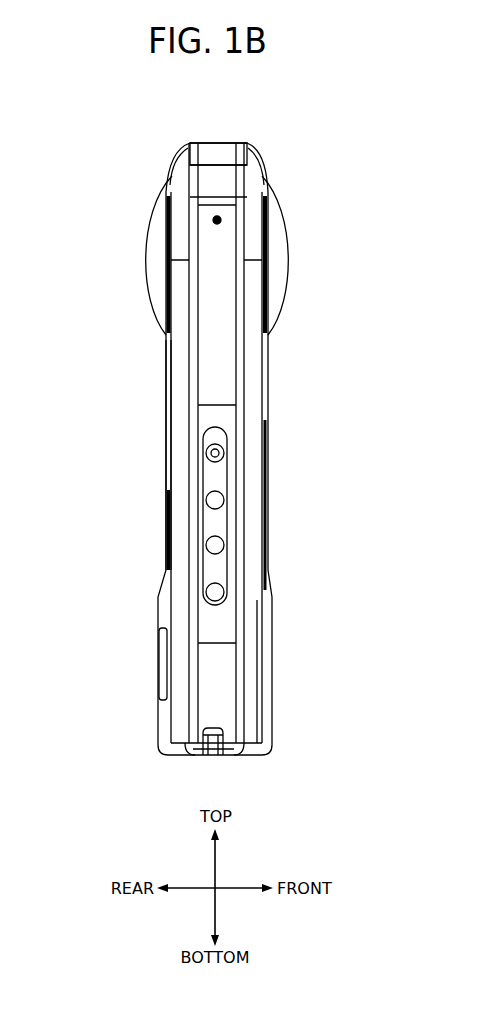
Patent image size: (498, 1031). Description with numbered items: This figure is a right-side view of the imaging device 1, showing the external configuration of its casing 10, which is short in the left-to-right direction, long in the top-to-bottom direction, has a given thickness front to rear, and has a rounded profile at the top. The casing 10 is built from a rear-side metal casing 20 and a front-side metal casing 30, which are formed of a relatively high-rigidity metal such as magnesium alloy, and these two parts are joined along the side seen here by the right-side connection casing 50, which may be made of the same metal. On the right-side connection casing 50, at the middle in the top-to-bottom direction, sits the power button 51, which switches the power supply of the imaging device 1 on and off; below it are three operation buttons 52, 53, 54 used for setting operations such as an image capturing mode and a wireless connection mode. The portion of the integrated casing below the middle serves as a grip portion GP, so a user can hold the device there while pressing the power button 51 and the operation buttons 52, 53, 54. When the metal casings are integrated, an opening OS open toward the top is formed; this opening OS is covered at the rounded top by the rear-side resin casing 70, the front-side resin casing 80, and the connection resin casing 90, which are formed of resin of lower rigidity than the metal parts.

The imaging device 1 is at (271, 153).
The casing 10 is at (165, 178).
The rear-side metal casing 20 is at (169, 392).
The front-side metal casing 30 is at (268, 403).
The right-side connection casing 50 is at (225, 690).
The power button 51 is at (222, 453).
The operation button 52 is at (222, 500).
The operation button 53 is at (222, 545).
The operation button 54 is at (222, 592).
The rear-side resin casing 70 is at (180, 163).
The front-side resin casing 80 is at (248, 153).
The connection resin casing 90 is at (217, 150).
The opening OS is at (219, 205).
The grip portion GP is at (156, 624).